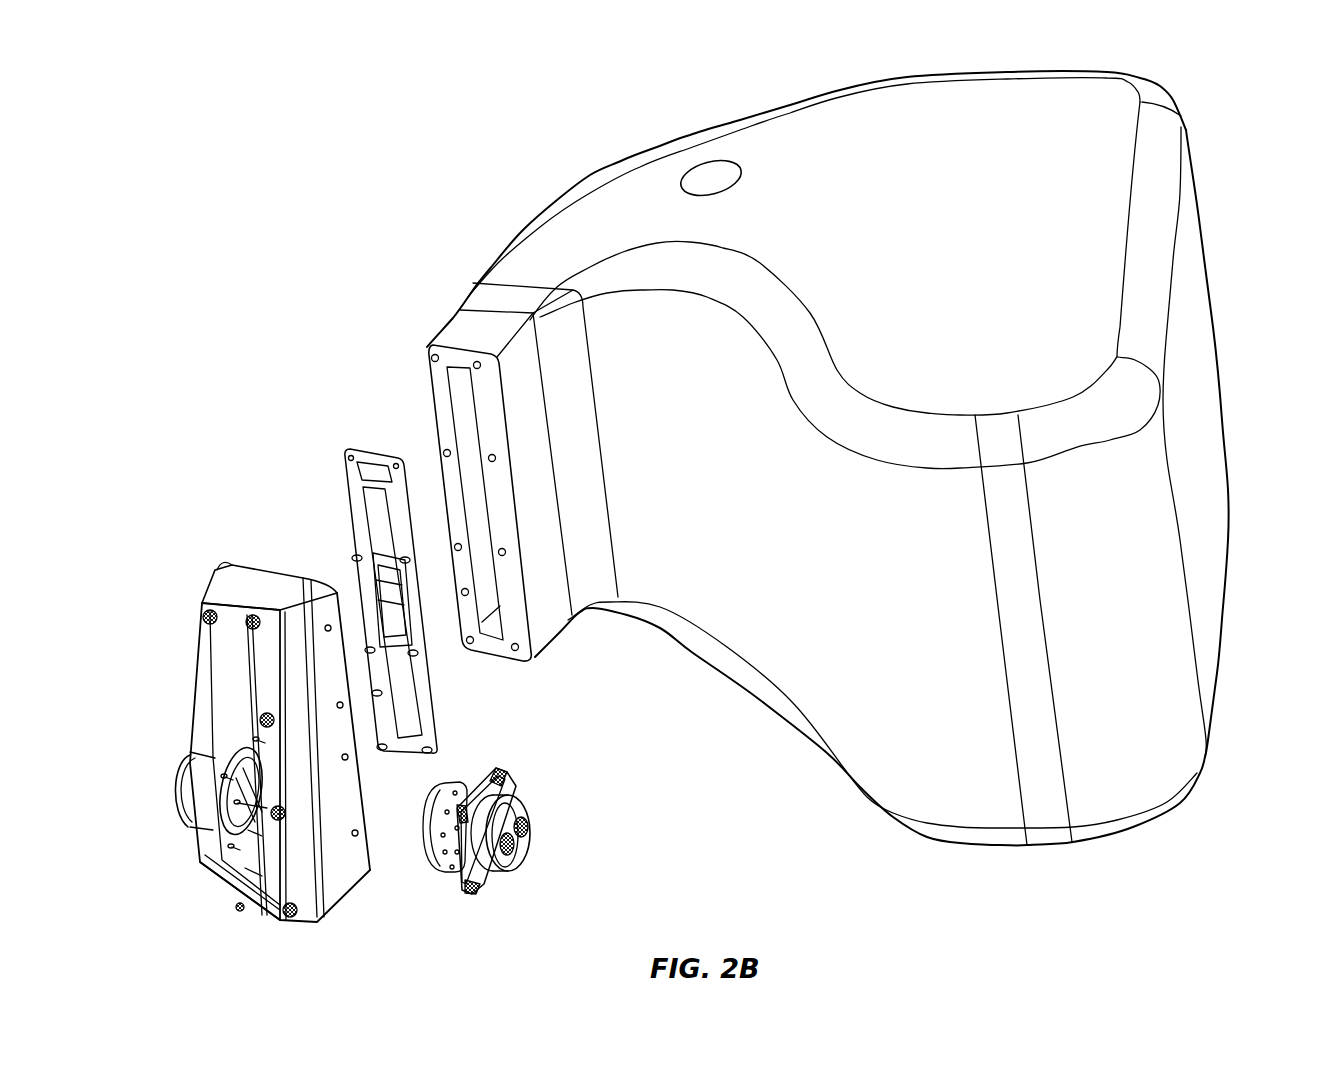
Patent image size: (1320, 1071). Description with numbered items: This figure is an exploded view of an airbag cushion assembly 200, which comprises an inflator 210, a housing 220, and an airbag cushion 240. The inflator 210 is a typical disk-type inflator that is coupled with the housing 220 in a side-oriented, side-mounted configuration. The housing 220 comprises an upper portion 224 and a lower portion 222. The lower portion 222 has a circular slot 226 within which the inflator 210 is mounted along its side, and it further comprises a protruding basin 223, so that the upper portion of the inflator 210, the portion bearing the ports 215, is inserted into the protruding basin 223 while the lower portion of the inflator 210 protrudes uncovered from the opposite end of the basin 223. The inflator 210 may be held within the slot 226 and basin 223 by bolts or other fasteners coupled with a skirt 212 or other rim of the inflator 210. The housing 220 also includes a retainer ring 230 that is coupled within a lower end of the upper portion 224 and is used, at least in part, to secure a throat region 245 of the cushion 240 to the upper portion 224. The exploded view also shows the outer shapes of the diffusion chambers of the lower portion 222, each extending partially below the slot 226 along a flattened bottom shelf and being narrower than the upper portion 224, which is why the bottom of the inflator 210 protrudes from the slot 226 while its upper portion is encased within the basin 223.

The airbag cushion assembly 200 is at (190, 112).
The inflator 210 is at (515, 853).
The skirt 212 is at (505, 784).
The ports 215 is at (457, 790).
The housing 220 is at (186, 631).
The lower portion 222 is at (252, 866).
The protruding basin 223 is at (176, 798).
The upper portion 224 is at (298, 628).
The circular slot 226 is at (257, 822).
The retainer ring 230 is at (355, 448).
The airbag cushion 240 is at (1222, 376).
The throat region 245 is at (453, 328).